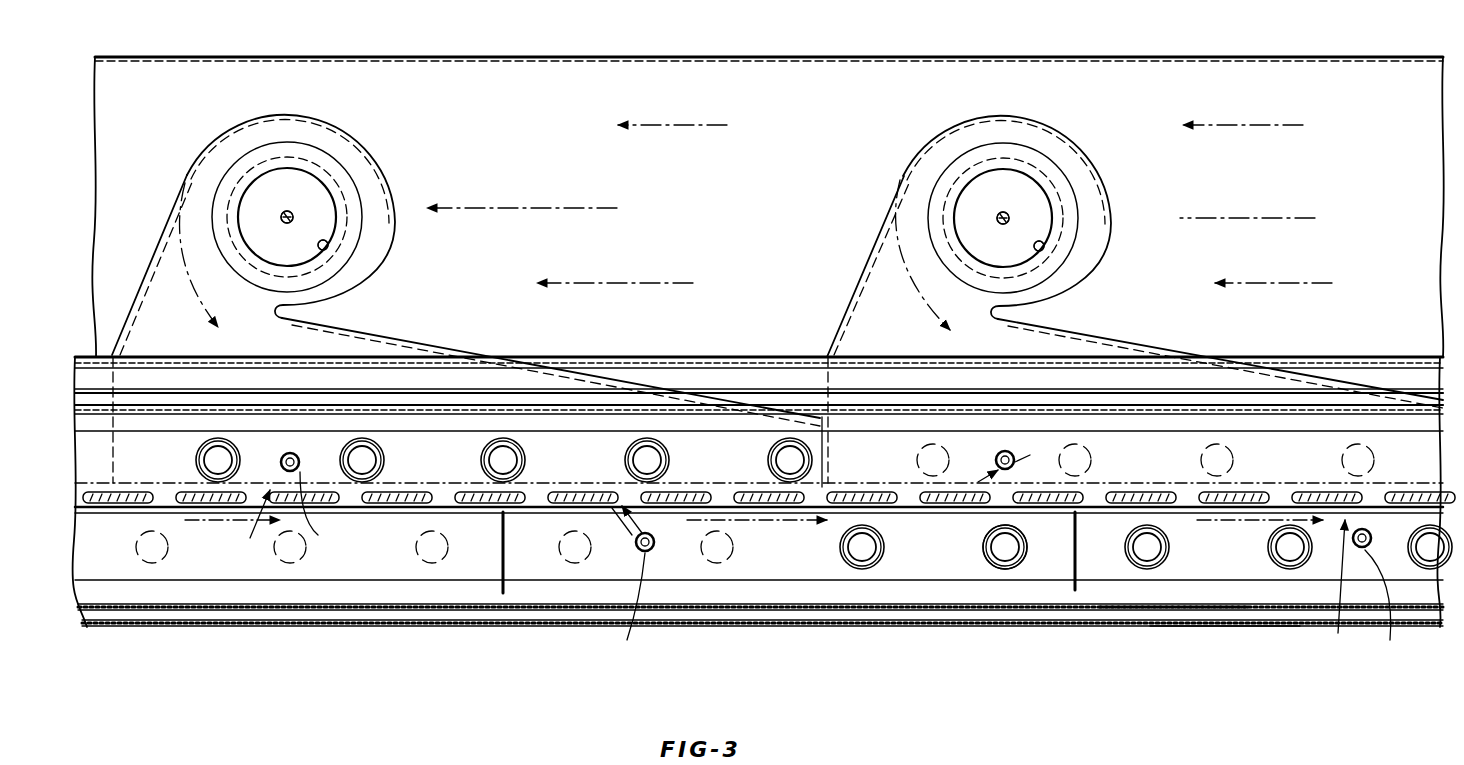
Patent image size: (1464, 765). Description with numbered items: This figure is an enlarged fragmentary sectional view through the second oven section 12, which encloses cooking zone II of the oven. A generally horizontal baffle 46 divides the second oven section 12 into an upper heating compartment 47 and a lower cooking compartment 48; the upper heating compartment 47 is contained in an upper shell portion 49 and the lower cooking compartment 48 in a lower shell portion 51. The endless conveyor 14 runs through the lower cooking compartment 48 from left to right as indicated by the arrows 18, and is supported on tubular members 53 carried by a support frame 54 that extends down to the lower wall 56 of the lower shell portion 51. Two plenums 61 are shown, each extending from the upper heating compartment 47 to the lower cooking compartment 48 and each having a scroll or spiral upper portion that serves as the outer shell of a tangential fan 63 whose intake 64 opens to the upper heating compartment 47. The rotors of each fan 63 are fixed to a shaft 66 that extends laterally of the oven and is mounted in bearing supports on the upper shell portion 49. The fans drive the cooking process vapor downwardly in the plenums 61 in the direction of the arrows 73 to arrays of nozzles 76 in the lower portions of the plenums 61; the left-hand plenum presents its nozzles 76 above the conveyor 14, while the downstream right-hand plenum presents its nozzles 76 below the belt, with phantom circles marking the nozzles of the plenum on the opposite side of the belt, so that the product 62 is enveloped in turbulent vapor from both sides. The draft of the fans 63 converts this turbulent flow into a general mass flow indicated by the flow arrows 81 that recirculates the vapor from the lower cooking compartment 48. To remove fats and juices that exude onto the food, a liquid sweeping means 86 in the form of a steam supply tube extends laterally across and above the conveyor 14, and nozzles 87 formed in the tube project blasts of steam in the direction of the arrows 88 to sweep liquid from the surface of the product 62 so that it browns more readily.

The second oven section 12 is at (832, 54).
The endless conveyor 14 is at (1300, 498).
The arrows 18 is at (205, 522).
The horizontal baffle 46 is at (790, 393).
The upper heating compartment 47 is at (847, 128).
The lower cooking compartment 48 is at (872, 468).
The upper shell portion 49 is at (1322, 85).
The lower shell portion 51 is at (1240, 628).
The tubular members 53 is at (970, 514).
The support frame 54 is at (1073, 590).
The lower wall 56 is at (1165, 598).
The plenums 61 is at (249, 343).
The product 62 is at (100, 492).
The tangential fan 63 is at (305, 185).
The intake 64 is at (326, 249).
The shaft 66 is at (302, 198).
The arrows 73 is at (198, 298).
The nozzles 76 is at (196, 462).
The flow arrows 81 is at (690, 128).
The liquid sweeping means 86 is at (863, 552).
The nozzles 87 is at (283, 458).
The arrows 88 is at (796, 550).